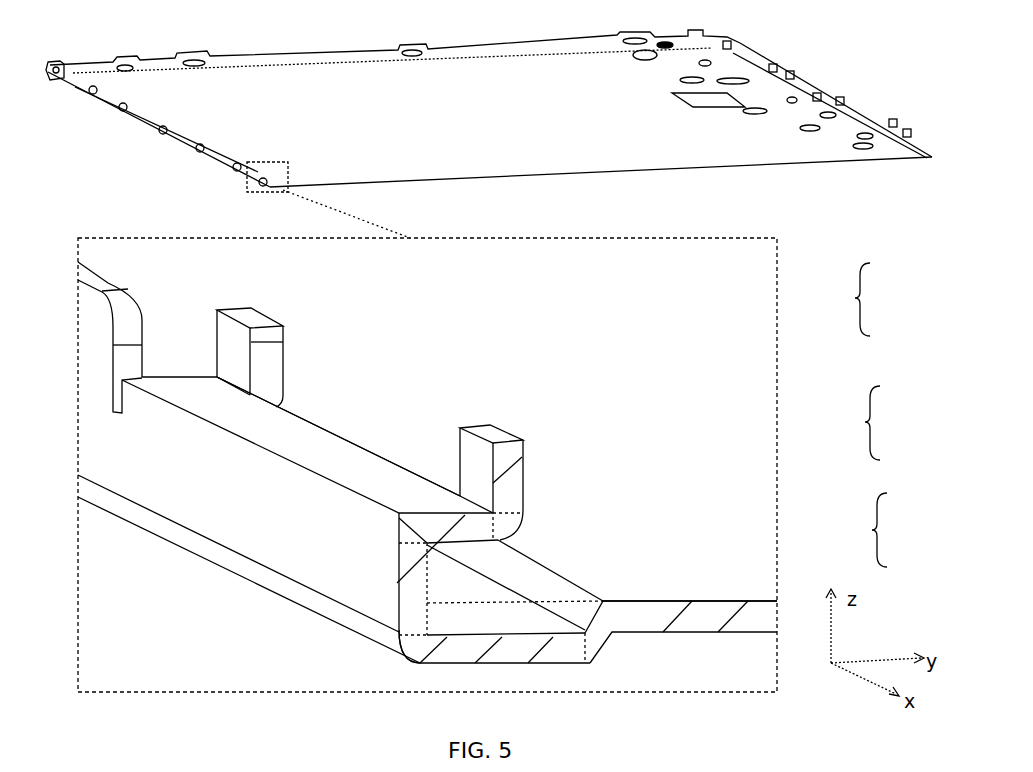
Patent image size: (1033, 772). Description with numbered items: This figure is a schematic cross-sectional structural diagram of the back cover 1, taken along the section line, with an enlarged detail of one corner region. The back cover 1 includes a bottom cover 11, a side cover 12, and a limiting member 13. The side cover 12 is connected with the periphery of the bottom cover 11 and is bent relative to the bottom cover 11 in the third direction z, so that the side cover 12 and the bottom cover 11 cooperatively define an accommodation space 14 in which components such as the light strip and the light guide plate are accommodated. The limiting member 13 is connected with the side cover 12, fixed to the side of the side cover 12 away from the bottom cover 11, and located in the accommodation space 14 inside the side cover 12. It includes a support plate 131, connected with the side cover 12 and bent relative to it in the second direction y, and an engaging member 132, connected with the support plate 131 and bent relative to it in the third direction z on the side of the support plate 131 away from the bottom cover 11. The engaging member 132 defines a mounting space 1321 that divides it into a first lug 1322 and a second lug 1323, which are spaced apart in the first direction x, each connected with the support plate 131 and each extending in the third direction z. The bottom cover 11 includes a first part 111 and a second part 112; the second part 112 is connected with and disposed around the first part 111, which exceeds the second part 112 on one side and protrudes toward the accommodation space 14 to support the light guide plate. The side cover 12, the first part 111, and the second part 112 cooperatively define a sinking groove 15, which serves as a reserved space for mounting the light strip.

The back cover 1 is at (52, 31).
The bottom cover 11 is at (884, 531).
The first part 111 is at (762, 615).
The second part 112 is at (510, 650).
The side cover 12 is at (312, 561).
The limiting member 13 is at (869, 303).
The support plate 131 is at (353, 468).
The engaging member 132 is at (878, 424).
The mounting space 1321 is at (312, 390).
The first lug 1322 is at (498, 437).
The second lug 1323 is at (256, 313).
The accommodation space 14 is at (462, 71).
The sinking groove 15 is at (443, 620).